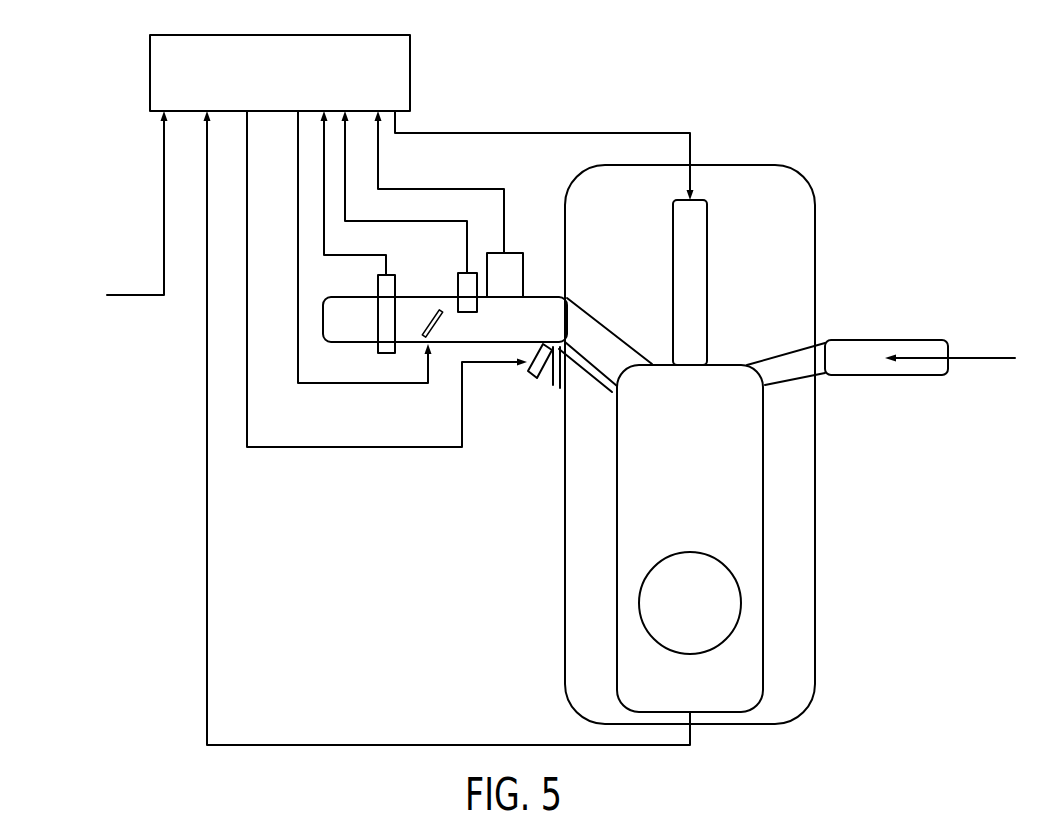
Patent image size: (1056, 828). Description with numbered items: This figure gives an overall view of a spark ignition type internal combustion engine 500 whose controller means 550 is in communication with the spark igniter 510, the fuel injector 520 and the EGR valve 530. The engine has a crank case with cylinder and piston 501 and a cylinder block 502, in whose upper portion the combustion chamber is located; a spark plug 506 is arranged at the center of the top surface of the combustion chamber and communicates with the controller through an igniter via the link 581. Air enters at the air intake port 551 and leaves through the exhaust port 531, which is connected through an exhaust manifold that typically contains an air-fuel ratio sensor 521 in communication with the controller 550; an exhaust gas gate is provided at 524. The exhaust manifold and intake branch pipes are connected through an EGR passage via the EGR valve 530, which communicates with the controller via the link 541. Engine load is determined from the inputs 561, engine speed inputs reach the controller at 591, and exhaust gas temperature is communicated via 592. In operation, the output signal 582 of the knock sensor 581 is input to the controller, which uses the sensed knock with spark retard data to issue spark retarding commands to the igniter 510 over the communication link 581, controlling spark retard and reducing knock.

The spark ignition type internal combustion engine 500 is at (1007, 56).
The controller means 550 is at (411, 73).
The EGR valve communication link 541 is at (454, 163).
The cylinder block 502 is at (815, 208).
The fuel injector 520 is at (707, 247).
The crank case with cylinder and piston 501 is at (764, 497).
The air intake port 551 is at (950, 345).
The exhaust port 531 is at (527, 297).
The spark plug 506 is at (580, 390).
The spark igniter 510 is at (543, 372).
The EGR valve 530 is at (506, 250).
The knock sensor / igniter communication link 581 is at (458, 282).
The knock sensor output signal 582 is at (383, 223).
The air-fuel ratio sensor 521 is at (378, 300).
The exhaust gas gate 524 is at (424, 338).
The exhaust gas temperature communication link 592 is at (318, 385).
The engine speed input link 591 is at (206, 630).
The load inputs 561 is at (80, 284).